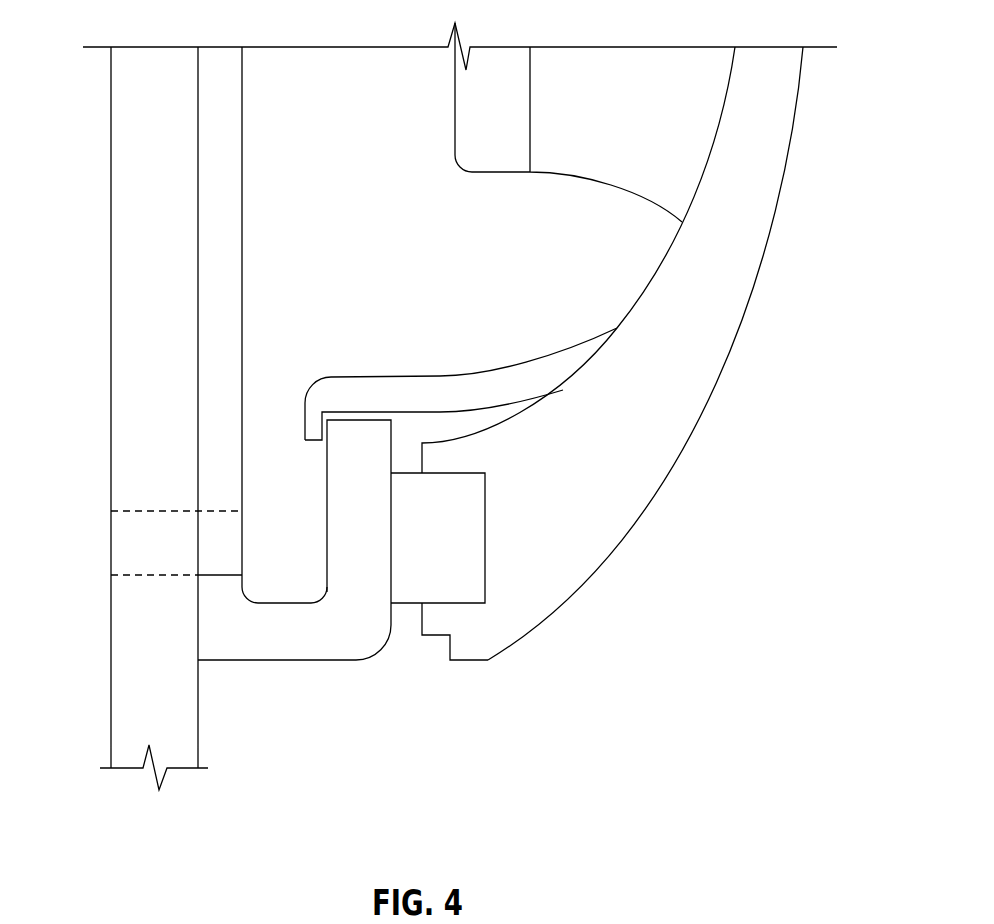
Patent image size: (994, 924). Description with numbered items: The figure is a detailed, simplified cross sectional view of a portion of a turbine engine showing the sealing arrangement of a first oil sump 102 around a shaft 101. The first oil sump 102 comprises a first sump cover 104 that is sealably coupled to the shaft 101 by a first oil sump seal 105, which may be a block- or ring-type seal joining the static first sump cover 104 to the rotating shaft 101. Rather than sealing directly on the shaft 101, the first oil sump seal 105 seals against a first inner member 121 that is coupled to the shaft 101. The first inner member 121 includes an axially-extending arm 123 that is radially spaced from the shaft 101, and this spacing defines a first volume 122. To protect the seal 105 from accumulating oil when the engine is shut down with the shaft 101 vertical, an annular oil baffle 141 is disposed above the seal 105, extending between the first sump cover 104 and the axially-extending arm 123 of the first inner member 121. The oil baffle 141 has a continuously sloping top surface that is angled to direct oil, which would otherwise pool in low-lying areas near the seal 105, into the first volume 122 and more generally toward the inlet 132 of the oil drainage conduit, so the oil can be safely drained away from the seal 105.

The shaft 101 is at (123, 695).
The first oil sump 102 is at (313, 129).
The first sump cover 104 is at (658, 480).
The first oil sump seal 105 is at (460, 552).
The first inner member 121 is at (279, 676).
The first volume 122 is at (318, 578).
The axially-extending arm 123 is at (343, 503).
The inlet 132 is at (160, 588).
The oil baffle 141 is at (447, 388).